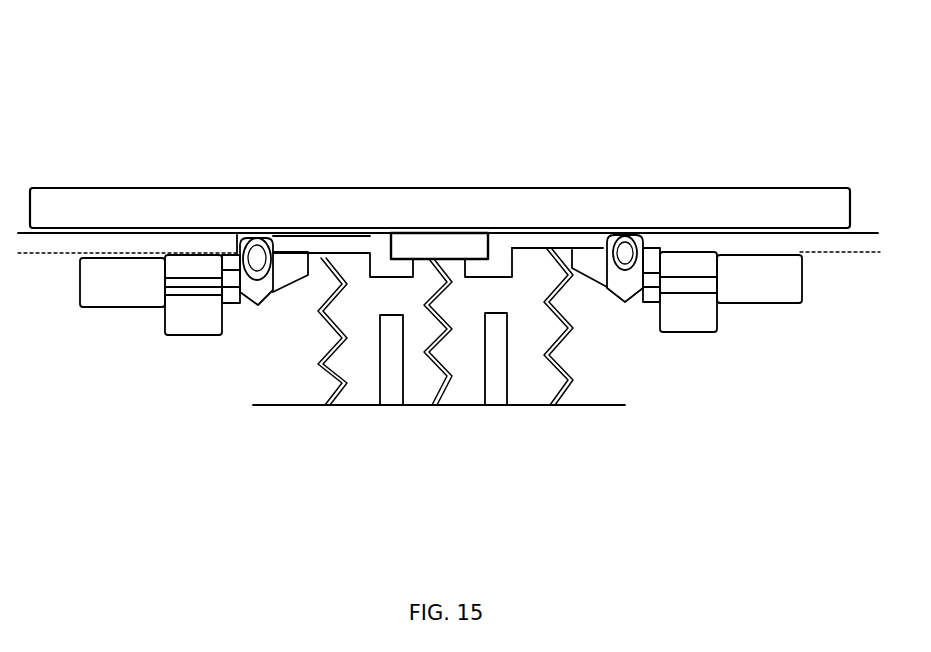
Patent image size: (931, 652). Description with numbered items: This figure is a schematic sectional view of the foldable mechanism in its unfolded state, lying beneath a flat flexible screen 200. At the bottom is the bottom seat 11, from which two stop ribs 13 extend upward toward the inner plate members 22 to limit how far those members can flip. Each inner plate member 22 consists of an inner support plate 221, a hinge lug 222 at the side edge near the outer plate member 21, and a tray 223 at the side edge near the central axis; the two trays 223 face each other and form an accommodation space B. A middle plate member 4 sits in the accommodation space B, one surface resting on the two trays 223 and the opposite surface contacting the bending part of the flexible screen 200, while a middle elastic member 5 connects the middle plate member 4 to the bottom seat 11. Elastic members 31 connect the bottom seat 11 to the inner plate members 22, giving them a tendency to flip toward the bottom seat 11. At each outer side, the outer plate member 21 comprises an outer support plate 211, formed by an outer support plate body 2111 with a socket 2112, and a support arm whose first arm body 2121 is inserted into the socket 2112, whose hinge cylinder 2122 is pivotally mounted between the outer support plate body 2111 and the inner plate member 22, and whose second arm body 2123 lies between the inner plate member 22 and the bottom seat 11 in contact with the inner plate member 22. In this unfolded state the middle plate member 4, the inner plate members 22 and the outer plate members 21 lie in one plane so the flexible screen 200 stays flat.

The flexible screen 200 is at (695, 224).
The outer plate member 21 is at (103, 85).
The outer support plate 211 is at (218, 133).
The outer support plate body 2111 is at (157, 243).
The socket 2112 is at (197, 273).
The first arm body 2121 is at (775, 290).
The hinge cylinder 2122 is at (625, 290).
The second arm body 2123 is at (582, 275).
The inner plate member 22 is at (523, 133).
The inner support plate 221 is at (567, 242).
The hinge lug 222 is at (620, 237).
The tray 223 is at (493, 268).
The middle plate member 4 is at (455, 245).
The accommodation space B is at (387, 232).
The bottom seat 11 is at (280, 407).
The stop rib 13 is at (383, 398).
The elastic member 31 is at (322, 402).
The middle elastic member 5 is at (430, 397).